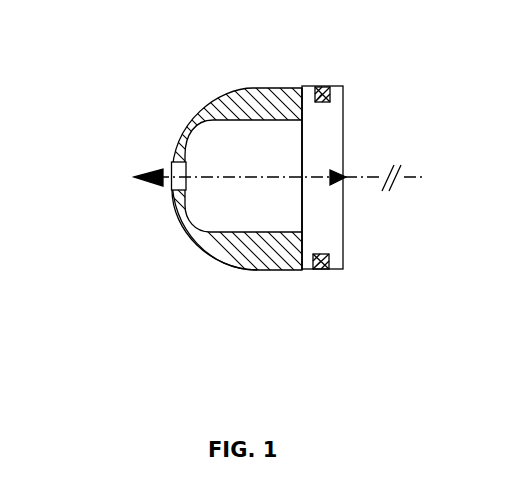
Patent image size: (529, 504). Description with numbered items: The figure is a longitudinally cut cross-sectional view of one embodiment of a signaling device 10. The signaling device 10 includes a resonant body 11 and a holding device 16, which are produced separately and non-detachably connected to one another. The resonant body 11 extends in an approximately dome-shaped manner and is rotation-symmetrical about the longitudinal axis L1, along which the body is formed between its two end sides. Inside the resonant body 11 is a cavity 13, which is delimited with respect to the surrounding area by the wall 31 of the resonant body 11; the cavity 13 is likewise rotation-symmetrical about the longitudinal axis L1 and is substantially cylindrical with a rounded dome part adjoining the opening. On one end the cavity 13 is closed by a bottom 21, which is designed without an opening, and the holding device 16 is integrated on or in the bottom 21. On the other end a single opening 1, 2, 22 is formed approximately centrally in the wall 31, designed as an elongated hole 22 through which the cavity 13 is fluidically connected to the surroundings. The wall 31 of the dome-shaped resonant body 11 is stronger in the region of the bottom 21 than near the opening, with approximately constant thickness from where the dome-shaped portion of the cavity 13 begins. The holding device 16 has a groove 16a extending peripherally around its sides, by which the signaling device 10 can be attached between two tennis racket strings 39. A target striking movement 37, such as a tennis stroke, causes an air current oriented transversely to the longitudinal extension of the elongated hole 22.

The signaling device 10 is at (272, 205).
The dome-shaped cap 1 is at (272, 156).
The cap wall 2 is at (272, 156).
The elongated hole 22 is at (272, 156).
The resonant body 11 is at (255, 93).
The cavity 13 is at (223, 148).
The bottom 21 is at (303, 130).
The wall 31 is at (208, 250).
The holding device 16 is at (332, 183).
The groove 16a is at (315, 272).
The tennis racket strings 39 is at (326, 86).
The target striking movement 37 is at (150, 185).
The longitudinal axis L1 is at (212, 172).